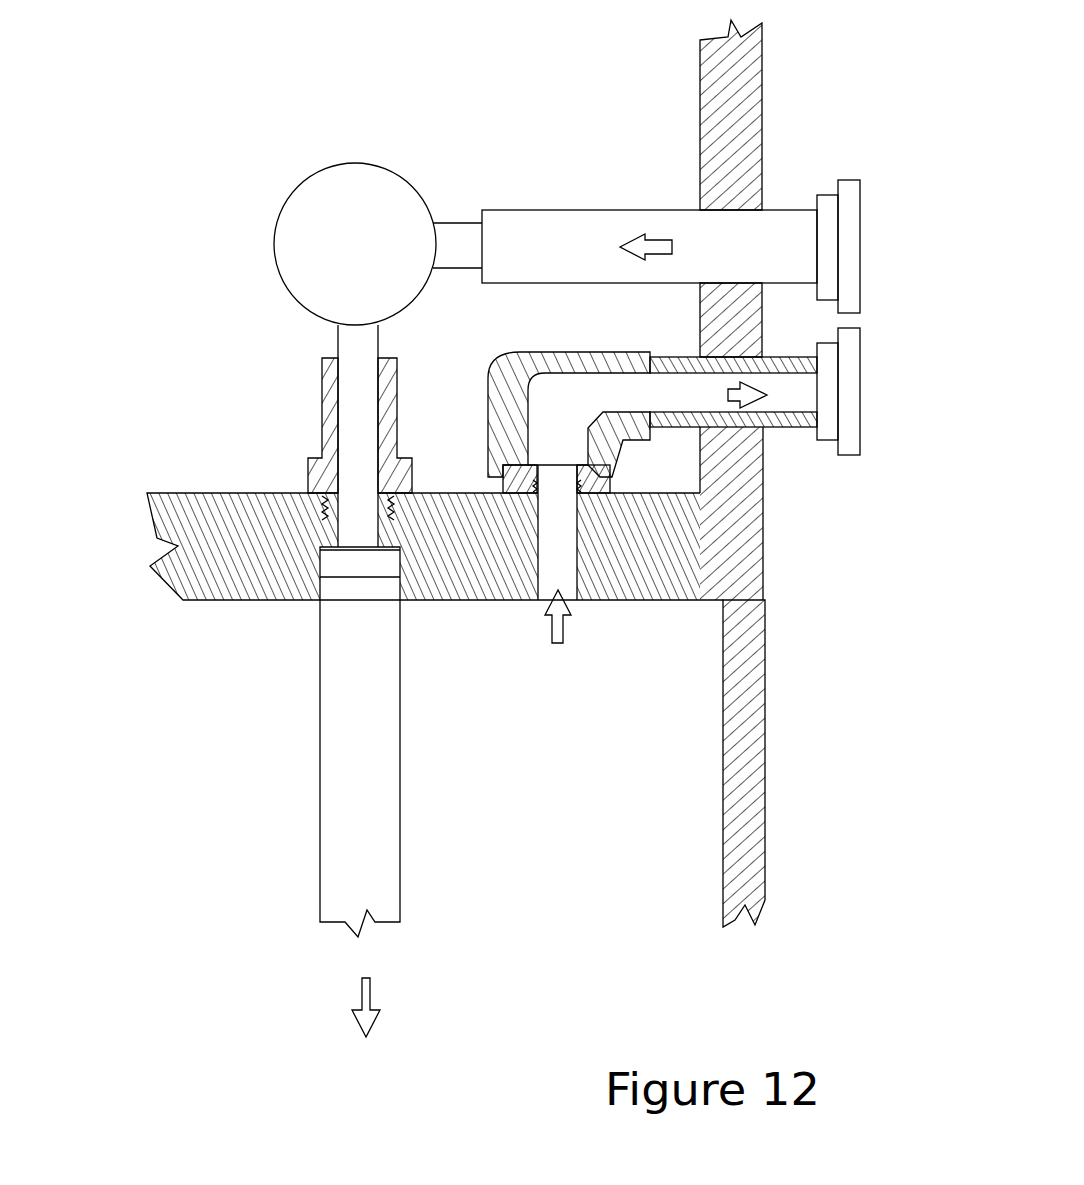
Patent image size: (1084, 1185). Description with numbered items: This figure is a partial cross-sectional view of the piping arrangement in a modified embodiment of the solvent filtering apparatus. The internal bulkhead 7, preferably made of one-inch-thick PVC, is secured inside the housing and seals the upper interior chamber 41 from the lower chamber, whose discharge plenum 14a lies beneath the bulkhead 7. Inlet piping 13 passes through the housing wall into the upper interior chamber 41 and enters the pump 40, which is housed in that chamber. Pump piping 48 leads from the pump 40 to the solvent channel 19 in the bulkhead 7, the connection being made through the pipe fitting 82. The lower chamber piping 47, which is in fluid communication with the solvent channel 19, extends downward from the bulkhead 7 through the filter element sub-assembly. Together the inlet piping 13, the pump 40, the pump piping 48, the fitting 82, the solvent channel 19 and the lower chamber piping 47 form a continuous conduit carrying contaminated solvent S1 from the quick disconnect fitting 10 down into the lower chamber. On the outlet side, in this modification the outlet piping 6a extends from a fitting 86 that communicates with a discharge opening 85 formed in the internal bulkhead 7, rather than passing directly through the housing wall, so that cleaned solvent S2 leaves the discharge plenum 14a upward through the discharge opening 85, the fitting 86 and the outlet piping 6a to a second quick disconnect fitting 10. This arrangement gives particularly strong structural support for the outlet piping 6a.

The upper interior chamber 41 is at (625, 464).
The pump 40 is at (318, 236).
The inlet piping 13 is at (556, 236).
The quick disconnect fitting 10 is at (862, 183).
The pump piping 48 is at (322, 400).
The internal bulkhead 7 is at (183, 518).
The pipe fitting 82 is at (318, 508).
The solvent channel 19 is at (355, 518).
The lower chamber piping 47 is at (342, 740).
The discharge plenum 14a is at (496, 785).
The cleaned solvent S2 is at (548, 620).
The discharge opening 85 is at (557, 545).
The fitting 86 is at (613, 482).
The outlet piping 6a is at (677, 427).
The contaminated solvent S1 is at (371, 993).